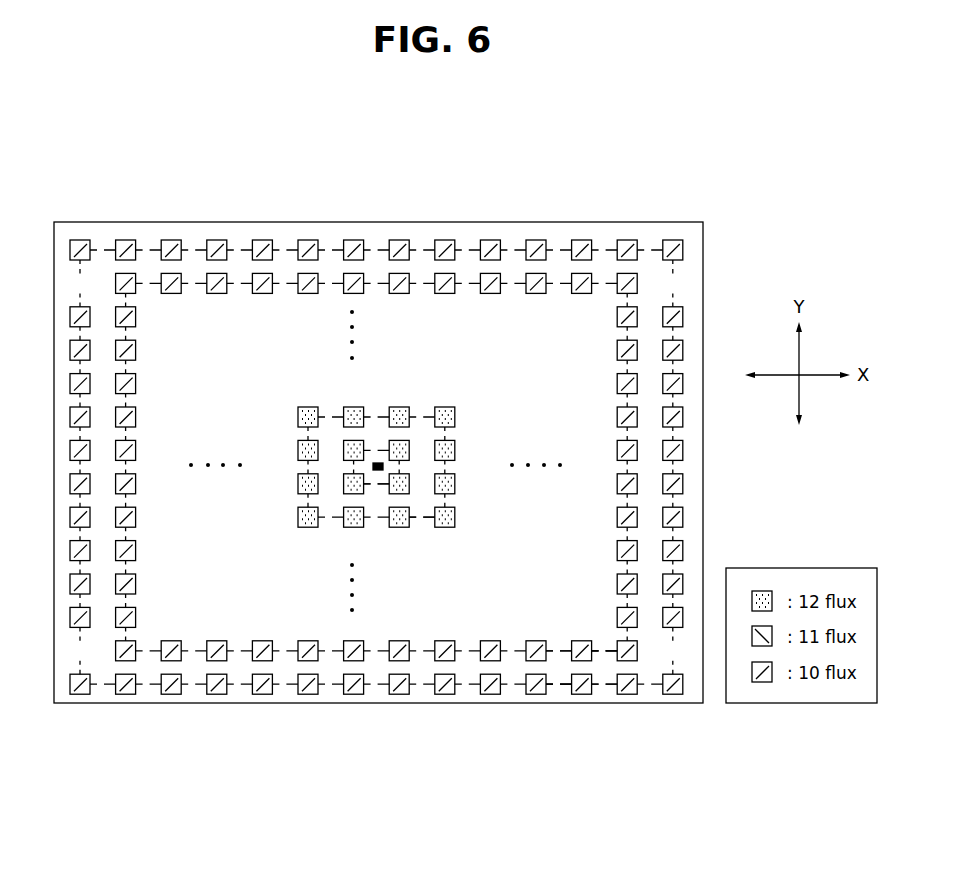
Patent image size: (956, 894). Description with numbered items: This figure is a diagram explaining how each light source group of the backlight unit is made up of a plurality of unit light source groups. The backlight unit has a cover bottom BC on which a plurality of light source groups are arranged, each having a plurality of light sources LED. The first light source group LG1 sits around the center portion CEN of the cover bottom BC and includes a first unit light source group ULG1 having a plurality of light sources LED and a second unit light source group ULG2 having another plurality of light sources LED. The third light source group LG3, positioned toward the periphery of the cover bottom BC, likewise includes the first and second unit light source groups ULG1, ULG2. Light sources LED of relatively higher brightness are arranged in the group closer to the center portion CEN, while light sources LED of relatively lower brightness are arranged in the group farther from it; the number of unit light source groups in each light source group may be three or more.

The light source LED is at (400, 407).
The cover bottom BC is at (128, 703).
The center portion CEN is at (376, 461).
The first light source group LG1 is at (437, 797).
The third light source group LG3 is at (618, 852).
The first unit light source group ULG1 is at (378, 484).
The second unit light source group ULG2 is at (423, 517).